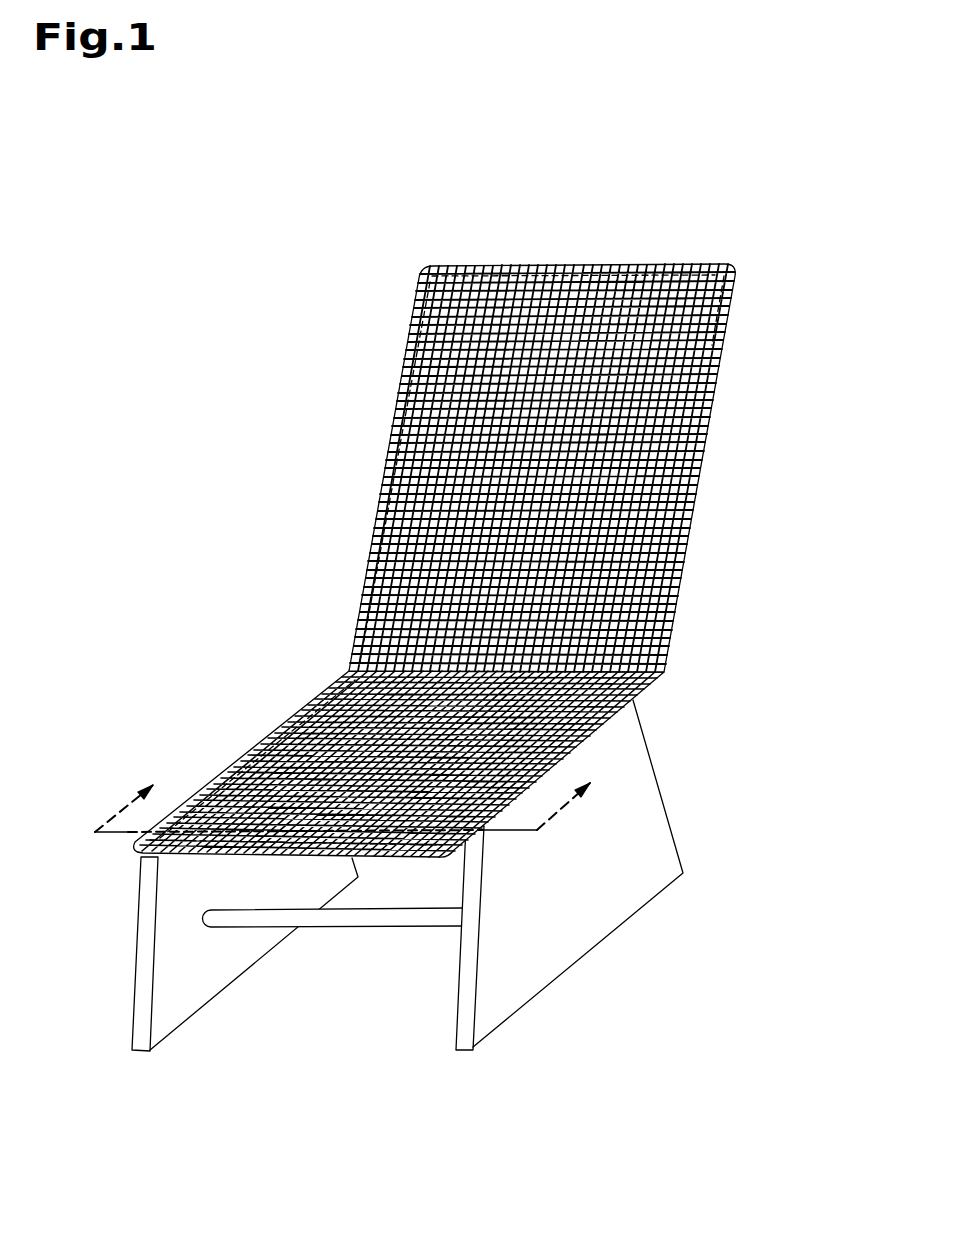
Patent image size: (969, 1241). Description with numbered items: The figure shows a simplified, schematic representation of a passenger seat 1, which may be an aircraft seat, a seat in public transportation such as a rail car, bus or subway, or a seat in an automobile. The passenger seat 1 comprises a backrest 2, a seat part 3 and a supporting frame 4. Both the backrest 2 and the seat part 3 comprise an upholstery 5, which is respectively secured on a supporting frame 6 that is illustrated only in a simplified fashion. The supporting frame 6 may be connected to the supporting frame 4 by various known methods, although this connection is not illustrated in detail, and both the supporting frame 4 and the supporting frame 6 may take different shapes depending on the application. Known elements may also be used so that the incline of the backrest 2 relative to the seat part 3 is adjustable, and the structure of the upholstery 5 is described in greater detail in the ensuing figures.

The passenger seat 1 is at (453, 551).
The backrest 2 is at (745, 395).
The seat part 3 is at (213, 728).
The supporting frame 4 is at (693, 750).
The upholstery 5 is at (472, 307).
The supporting frame 6 is at (688, 537).